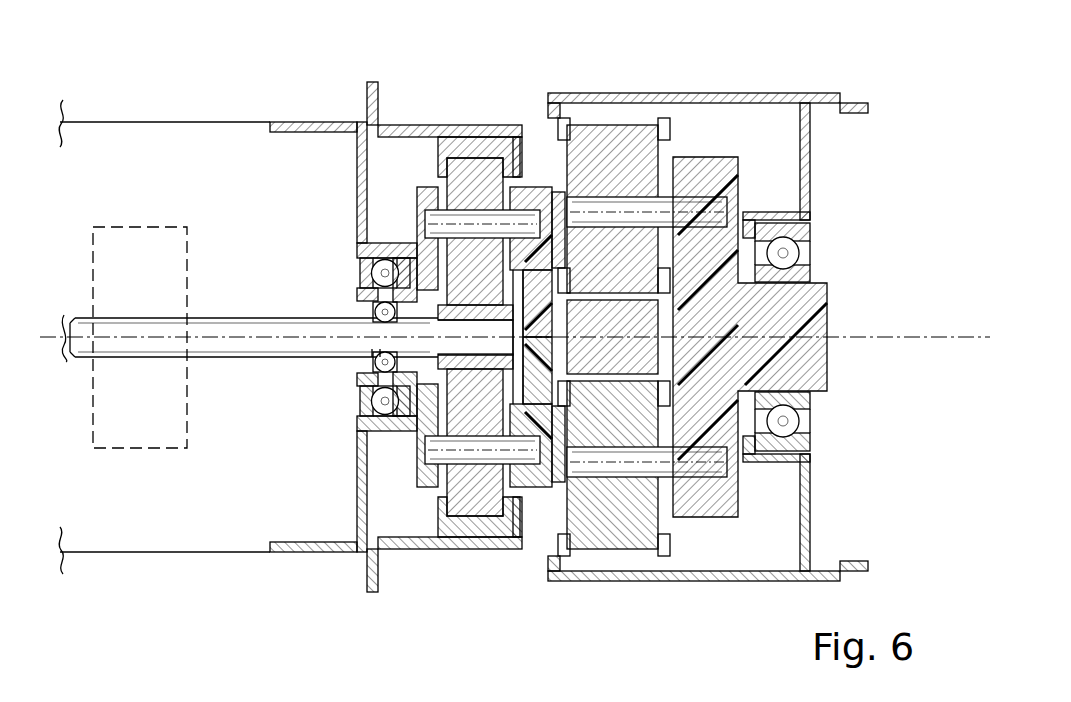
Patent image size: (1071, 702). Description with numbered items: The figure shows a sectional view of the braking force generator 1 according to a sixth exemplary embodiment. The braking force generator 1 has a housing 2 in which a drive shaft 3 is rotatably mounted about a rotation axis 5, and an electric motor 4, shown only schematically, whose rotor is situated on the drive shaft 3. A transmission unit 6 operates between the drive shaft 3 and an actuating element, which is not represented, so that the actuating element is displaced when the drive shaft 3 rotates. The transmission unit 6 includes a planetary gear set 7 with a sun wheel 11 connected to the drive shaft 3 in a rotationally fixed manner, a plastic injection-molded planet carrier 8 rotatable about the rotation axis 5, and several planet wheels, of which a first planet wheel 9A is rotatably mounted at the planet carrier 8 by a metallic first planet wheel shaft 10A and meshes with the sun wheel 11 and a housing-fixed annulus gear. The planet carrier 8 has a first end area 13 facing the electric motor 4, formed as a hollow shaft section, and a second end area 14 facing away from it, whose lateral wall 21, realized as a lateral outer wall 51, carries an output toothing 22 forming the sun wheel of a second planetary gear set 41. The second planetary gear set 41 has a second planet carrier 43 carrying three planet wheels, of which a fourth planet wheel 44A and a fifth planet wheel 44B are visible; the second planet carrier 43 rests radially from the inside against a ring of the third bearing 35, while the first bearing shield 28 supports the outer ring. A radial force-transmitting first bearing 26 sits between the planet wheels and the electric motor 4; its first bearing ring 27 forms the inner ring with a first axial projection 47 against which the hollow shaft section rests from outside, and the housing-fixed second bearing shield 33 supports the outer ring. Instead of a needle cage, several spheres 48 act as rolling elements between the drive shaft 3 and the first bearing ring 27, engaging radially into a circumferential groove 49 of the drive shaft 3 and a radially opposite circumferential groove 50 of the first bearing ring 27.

The braking force generator 1 is at (401, 369).
The housing 2 is at (149, 122).
The drive shaft 3 is at (203, 318).
The electric motor 4 is at (137, 450).
The rotation axis 5 is at (212, 360).
The transmission unit 6 is at (484, 573).
The planetary gear set 7 is at (481, 313).
The planet carrier 8 is at (527, 192).
The first planet wheel 9A is at (472, 170).
The first planet wheel shaft 10A is at (496, 222).
The sun wheel 11 is at (487, 358).
The first end area 13 is at (414, 158).
The second end area 14 is at (630, 343).
The lateral wall 21 is at (750, 396).
The output toothing 22 is at (646, 374).
The first bearing 26 is at (362, 270).
The first bearing ring 27 is at (362, 400).
The first bearing shield 28 is at (360, 258).
The second bearing shield 33 is at (357, 182).
The third bearing 35 is at (800, 272).
The second planetary gear set 41 is at (745, 128).
The second planet carrier 43 is at (784, 396).
The fourth planet wheel 44A is at (628, 148).
The fifth planet wheel 44B is at (618, 520).
The first axial projection 47 is at (408, 425).
The spheres 48 is at (376, 312).
The circumferential groove 49 is at (372, 350).
The circumferential groove 50 is at (360, 294).
The lateral outer wall 51 is at (708, 310).